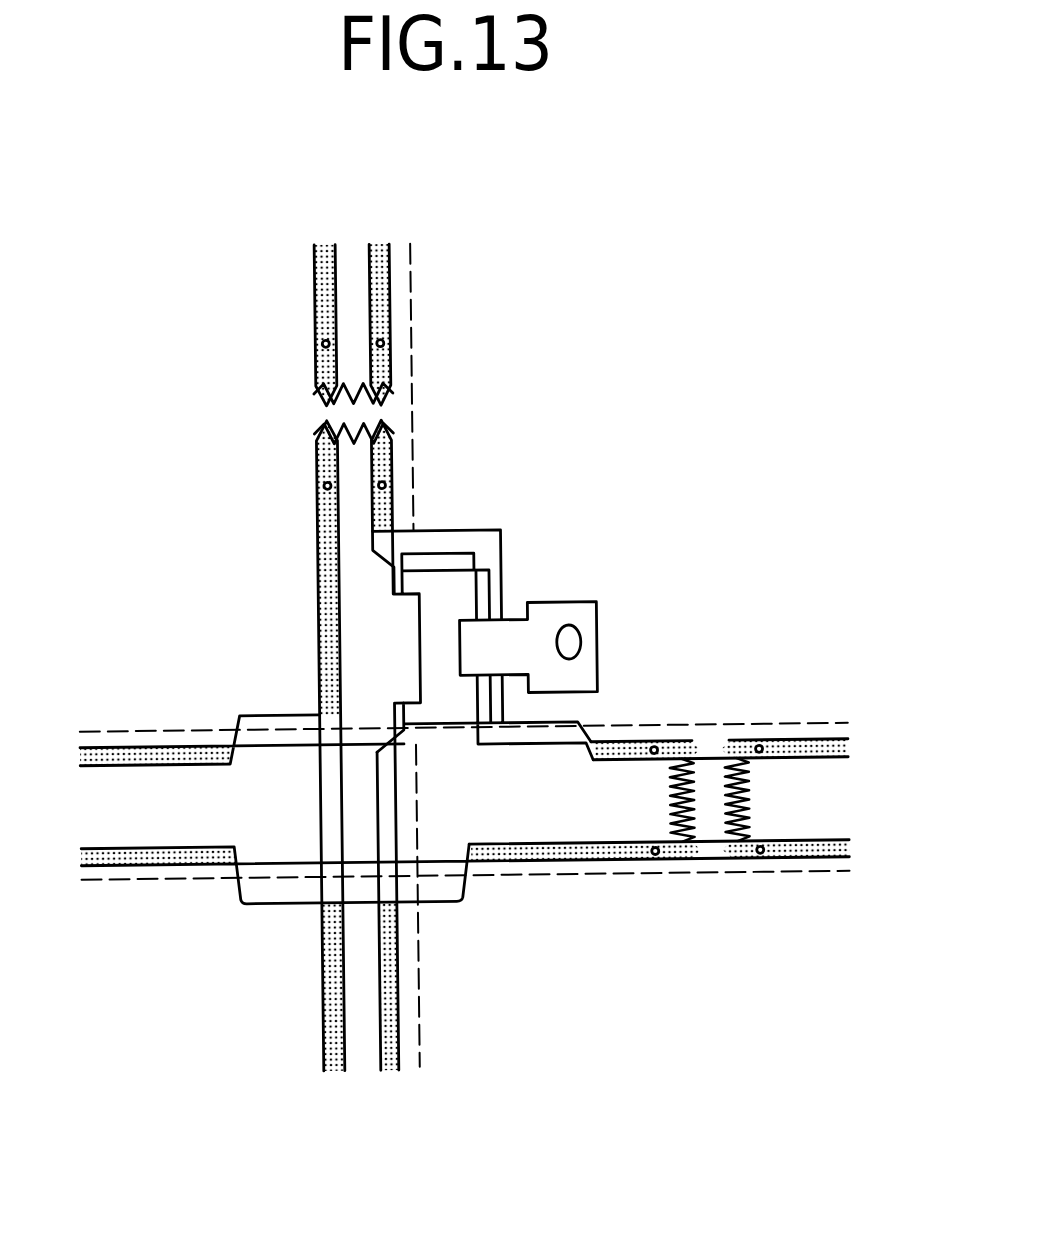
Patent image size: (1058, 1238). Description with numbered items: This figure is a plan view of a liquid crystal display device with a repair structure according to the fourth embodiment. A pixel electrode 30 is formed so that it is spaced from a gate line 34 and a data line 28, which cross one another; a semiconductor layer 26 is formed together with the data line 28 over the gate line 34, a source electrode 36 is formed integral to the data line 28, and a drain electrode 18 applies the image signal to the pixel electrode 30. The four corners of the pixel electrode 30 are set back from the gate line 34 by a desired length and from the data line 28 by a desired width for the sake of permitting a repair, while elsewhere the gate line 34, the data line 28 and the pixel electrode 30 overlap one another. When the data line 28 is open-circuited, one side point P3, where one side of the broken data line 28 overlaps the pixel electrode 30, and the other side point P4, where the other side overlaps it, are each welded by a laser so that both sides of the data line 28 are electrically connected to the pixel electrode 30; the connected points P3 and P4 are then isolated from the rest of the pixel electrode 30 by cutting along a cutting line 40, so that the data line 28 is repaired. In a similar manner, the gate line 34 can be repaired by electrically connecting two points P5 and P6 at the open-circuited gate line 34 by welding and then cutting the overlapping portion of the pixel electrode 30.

The drain electrode 18 is at (584, 606).
The semiconductor layer 26 is at (320, 961).
The data line 28 is at (395, 1033).
The pixel electrode 30 is at (743, 507).
The gate line 34 is at (204, 773).
The source electrode 36 is at (419, 630).
The cutting line 40 is at (418, 276).
The one side point P3 is at (396, 343).
The other side point P4 is at (425, 343).
The gate line repair point P5 is at (654, 733).
The gate line repair point P6 is at (758, 733).